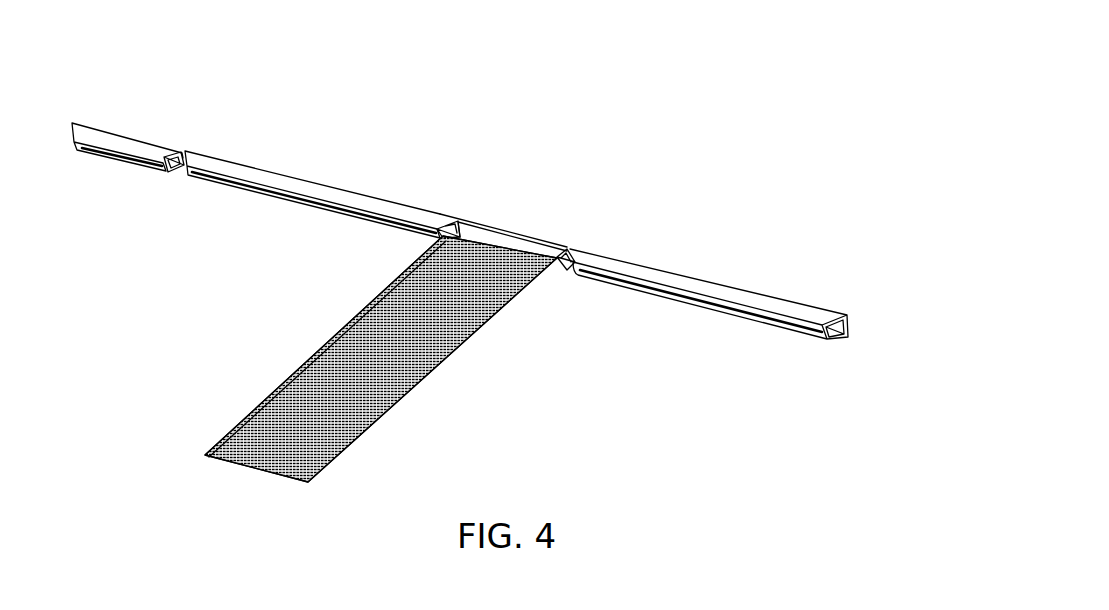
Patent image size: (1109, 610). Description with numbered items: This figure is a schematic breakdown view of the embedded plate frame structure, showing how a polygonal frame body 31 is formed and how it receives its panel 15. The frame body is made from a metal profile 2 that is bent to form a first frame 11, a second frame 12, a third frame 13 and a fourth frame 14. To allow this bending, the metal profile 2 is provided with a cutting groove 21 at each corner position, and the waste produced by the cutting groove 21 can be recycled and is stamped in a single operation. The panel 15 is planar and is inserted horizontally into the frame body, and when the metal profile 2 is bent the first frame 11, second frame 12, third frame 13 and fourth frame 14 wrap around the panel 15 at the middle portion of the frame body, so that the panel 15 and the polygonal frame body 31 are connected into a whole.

The metal profile 2 is at (528, 199).
The first frame 11 is at (517, 245).
The second frame 12 is at (110, 143).
The third frame 13 is at (282, 183).
The fourth frame 14 is at (703, 290).
The cutting groove 21 is at (183, 152).
The panel 15 is at (438, 368).
The polygonal frame body 31 is at (398, 407).